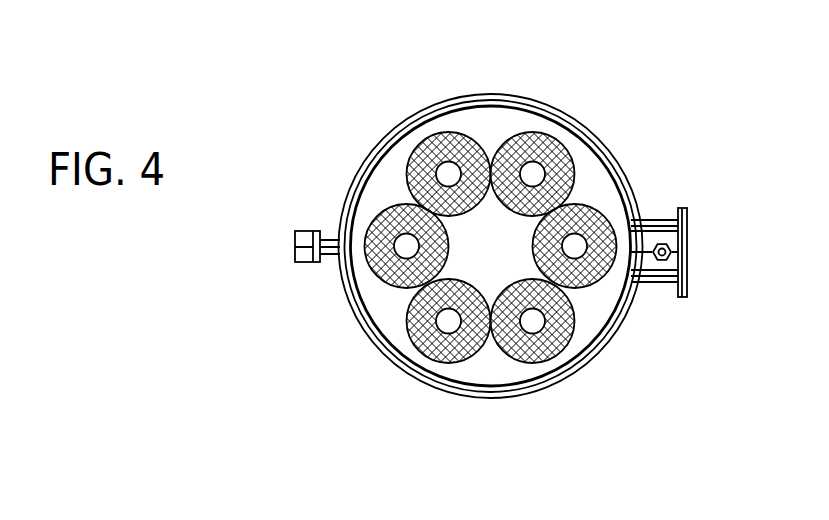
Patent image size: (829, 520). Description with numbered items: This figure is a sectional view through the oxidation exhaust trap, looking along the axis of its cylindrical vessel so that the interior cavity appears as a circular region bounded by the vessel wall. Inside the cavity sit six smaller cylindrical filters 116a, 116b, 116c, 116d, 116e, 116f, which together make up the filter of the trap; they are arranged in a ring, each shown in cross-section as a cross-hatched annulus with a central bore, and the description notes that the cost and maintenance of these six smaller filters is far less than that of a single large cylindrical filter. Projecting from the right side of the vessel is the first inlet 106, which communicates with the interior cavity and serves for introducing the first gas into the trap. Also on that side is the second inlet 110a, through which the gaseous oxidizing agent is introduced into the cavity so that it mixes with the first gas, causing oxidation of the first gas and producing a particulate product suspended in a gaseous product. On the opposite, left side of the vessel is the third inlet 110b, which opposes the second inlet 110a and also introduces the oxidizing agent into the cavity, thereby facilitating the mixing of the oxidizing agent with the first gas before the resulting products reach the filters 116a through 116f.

The first inlet 106 is at (688, 255).
The second inlet 110a is at (656, 243).
The third inlet 110b is at (310, 263).
The cylindrical filter 116a is at (560, 145).
The cylindrical filter 116b is at (446, 146).
The cylindrical filter 116c is at (378, 222).
The cylindrical filter 116d is at (410, 322).
The cylindrical filter 116e is at (563, 345).
The cylindrical filter 116f is at (596, 292).